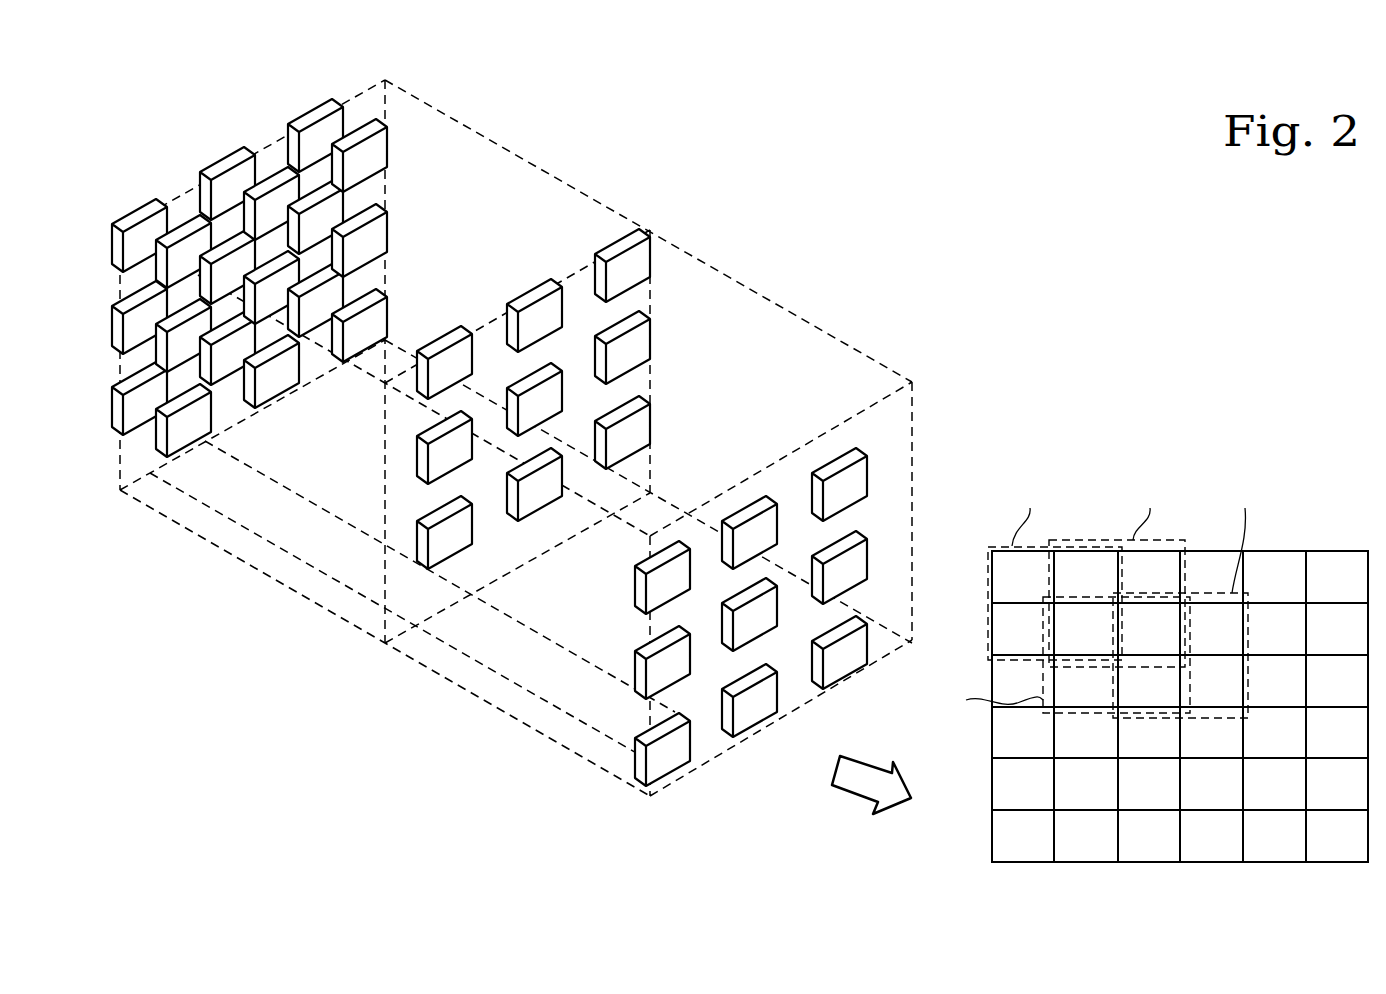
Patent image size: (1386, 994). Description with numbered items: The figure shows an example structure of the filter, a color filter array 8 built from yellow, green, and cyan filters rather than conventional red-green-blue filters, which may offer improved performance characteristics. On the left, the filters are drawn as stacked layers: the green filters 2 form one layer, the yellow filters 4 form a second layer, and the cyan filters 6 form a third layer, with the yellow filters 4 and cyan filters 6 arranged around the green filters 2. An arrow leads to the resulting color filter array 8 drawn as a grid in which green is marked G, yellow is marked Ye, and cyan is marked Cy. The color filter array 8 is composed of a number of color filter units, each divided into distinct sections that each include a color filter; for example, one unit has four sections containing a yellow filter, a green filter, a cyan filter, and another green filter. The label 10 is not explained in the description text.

The green filter 2 is at (387, 224).
The yellow filter 4 is at (652, 334).
The cyan filter 6 is at (914, 428).
The color filter array 8 is at (1336, 551).
The color filter unit pattern 10 is at (1100, 573).